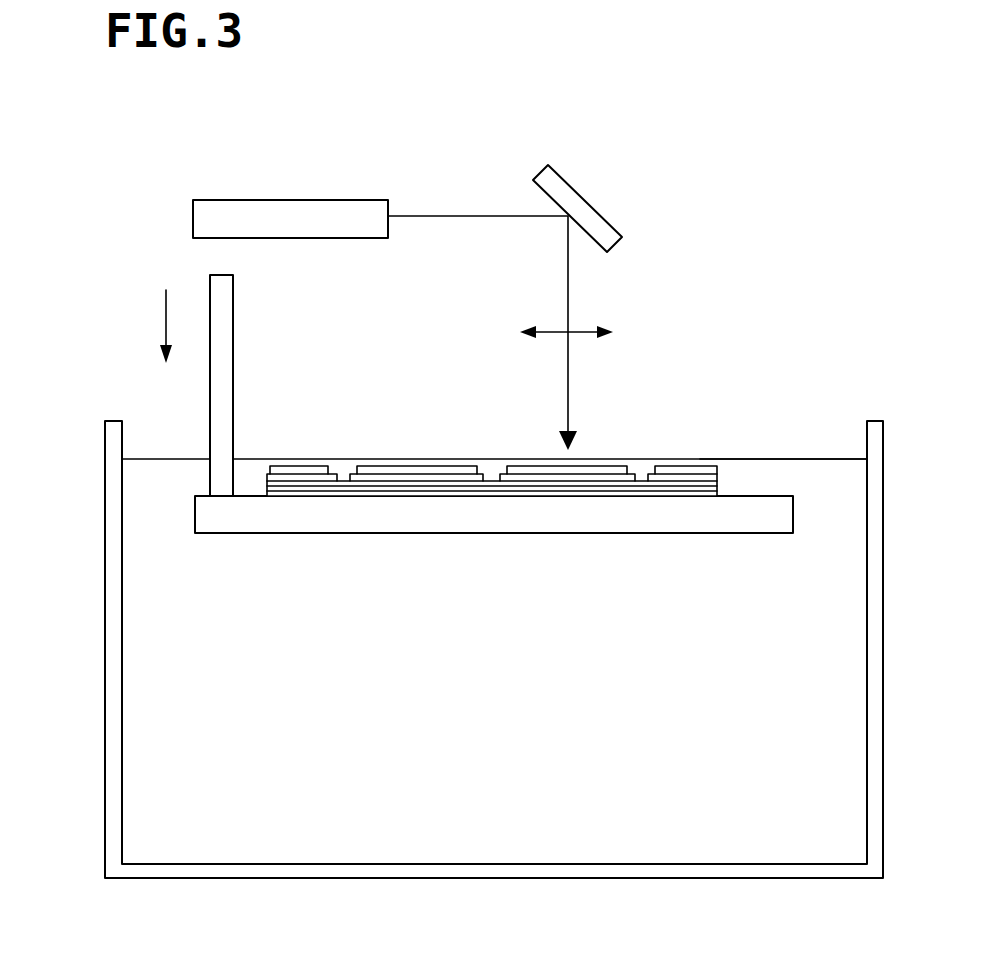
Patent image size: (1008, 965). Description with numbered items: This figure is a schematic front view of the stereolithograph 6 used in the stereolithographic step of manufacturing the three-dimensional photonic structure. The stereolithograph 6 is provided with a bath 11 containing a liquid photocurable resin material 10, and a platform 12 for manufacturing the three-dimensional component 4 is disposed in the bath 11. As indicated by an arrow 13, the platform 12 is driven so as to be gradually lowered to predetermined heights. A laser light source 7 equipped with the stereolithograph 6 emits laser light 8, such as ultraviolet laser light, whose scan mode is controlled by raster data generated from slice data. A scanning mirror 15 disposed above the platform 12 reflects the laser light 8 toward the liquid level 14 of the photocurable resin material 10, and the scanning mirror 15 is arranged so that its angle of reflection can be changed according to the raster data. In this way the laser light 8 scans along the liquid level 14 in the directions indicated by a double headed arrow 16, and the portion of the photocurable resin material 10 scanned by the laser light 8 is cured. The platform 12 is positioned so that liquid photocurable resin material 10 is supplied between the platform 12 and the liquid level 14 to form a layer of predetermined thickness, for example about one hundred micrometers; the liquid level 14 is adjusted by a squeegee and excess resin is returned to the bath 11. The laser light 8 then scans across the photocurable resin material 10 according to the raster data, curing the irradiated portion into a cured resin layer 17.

The stereolithograph 6 is at (119, 128).
The laser light source 7 is at (298, 200).
The laser light 8 is at (568, 398).
The three-dimensional component 4 is at (499, 434).
The photocurable resin material 10 is at (152, 707).
The bath 11 is at (110, 813).
The platform 12 is at (207, 512).
The arrow 13 is at (165, 327).
The liquid level 14 is at (783, 457).
The scanning mirror 15 is at (580, 202).
The double headed arrow 16 is at (580, 327).
The cured resin layer 17 is at (403, 477).